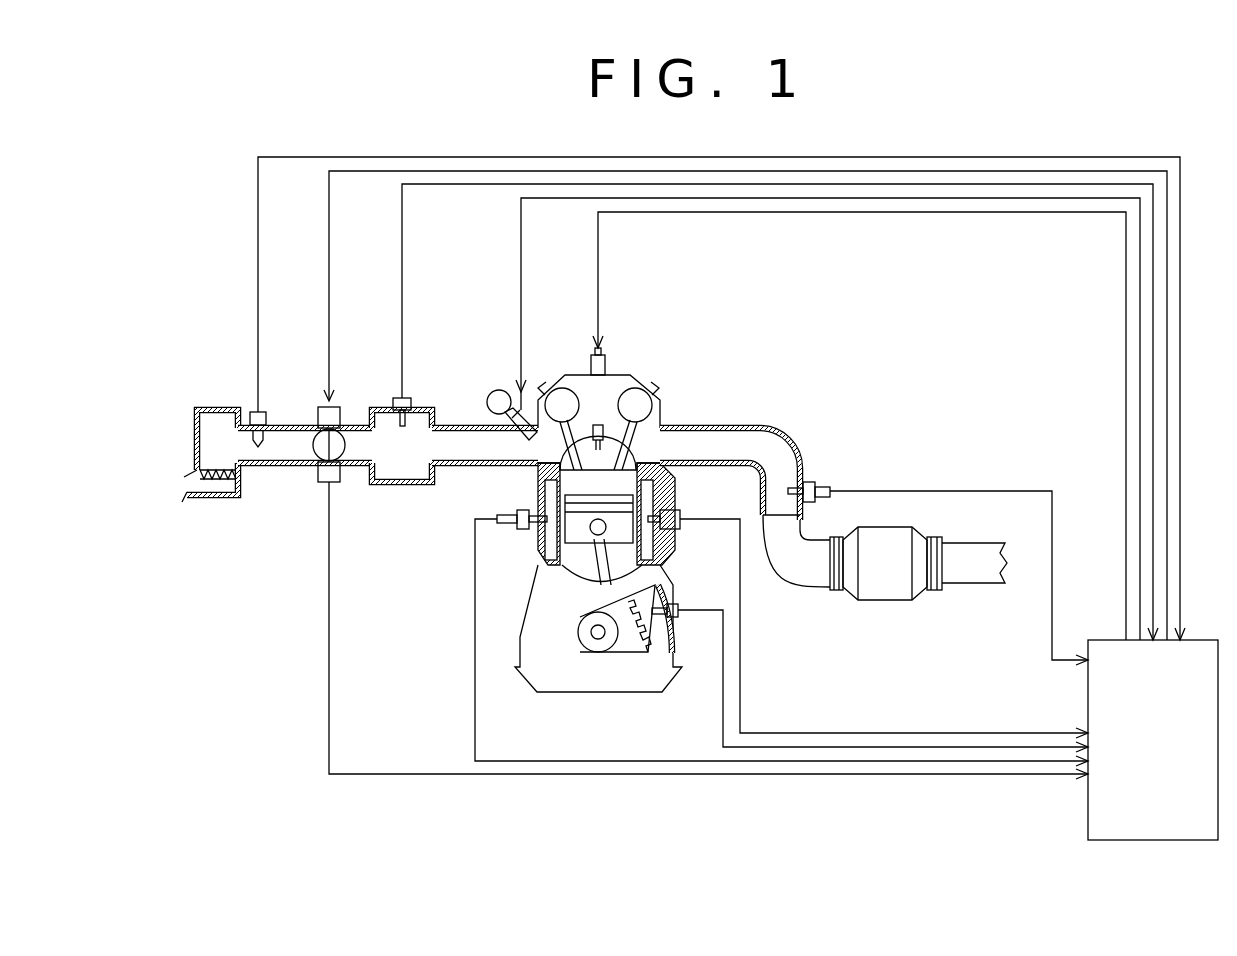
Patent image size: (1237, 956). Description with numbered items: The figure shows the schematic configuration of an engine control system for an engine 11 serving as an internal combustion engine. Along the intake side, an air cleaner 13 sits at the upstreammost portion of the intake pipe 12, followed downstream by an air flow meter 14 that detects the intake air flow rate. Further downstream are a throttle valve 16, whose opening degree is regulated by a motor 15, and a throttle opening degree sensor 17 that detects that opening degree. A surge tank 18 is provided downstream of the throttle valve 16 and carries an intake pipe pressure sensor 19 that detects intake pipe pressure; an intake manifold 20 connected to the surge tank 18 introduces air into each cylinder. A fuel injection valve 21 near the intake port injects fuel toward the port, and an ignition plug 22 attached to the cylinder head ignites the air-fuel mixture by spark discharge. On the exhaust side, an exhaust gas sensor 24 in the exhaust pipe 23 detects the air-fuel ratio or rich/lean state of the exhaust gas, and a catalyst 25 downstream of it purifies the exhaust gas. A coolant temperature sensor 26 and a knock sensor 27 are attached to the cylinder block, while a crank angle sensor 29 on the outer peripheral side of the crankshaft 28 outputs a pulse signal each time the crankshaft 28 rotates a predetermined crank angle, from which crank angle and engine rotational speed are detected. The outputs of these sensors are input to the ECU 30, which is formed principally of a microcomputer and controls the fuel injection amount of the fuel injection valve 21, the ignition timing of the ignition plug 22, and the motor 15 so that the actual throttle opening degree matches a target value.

The engine 11 is at (640, 378).
The intake pipe 12 is at (289, 424).
The air cleaner 13 is at (216, 486).
The air flow meter 14 is at (254, 412).
The motor 15 is at (318, 406).
The throttle valve 16 is at (318, 448).
The throttle opening degree sensor 17 is at (336, 484).
The surge tank 18 is at (402, 485).
The intake pipe pressure sensor 19 is at (394, 400).
The intake manifold 20 is at (466, 424).
The fuel injection valve 21 is at (528, 394).
The ignition plug 22 is at (612, 448).
The exhaust pipe 23 is at (740, 423).
The exhaust gas sensor 24 is at (812, 479).
The catalyst 25 is at (887, 523).
The coolant temperature sensor 26 is at (520, 528).
The knock sensor 27 is at (680, 530).
The crankshaft 28 is at (590, 650).
The crank angle sensor 29 is at (679, 618).
The ECU 30 is at (1088, 800).